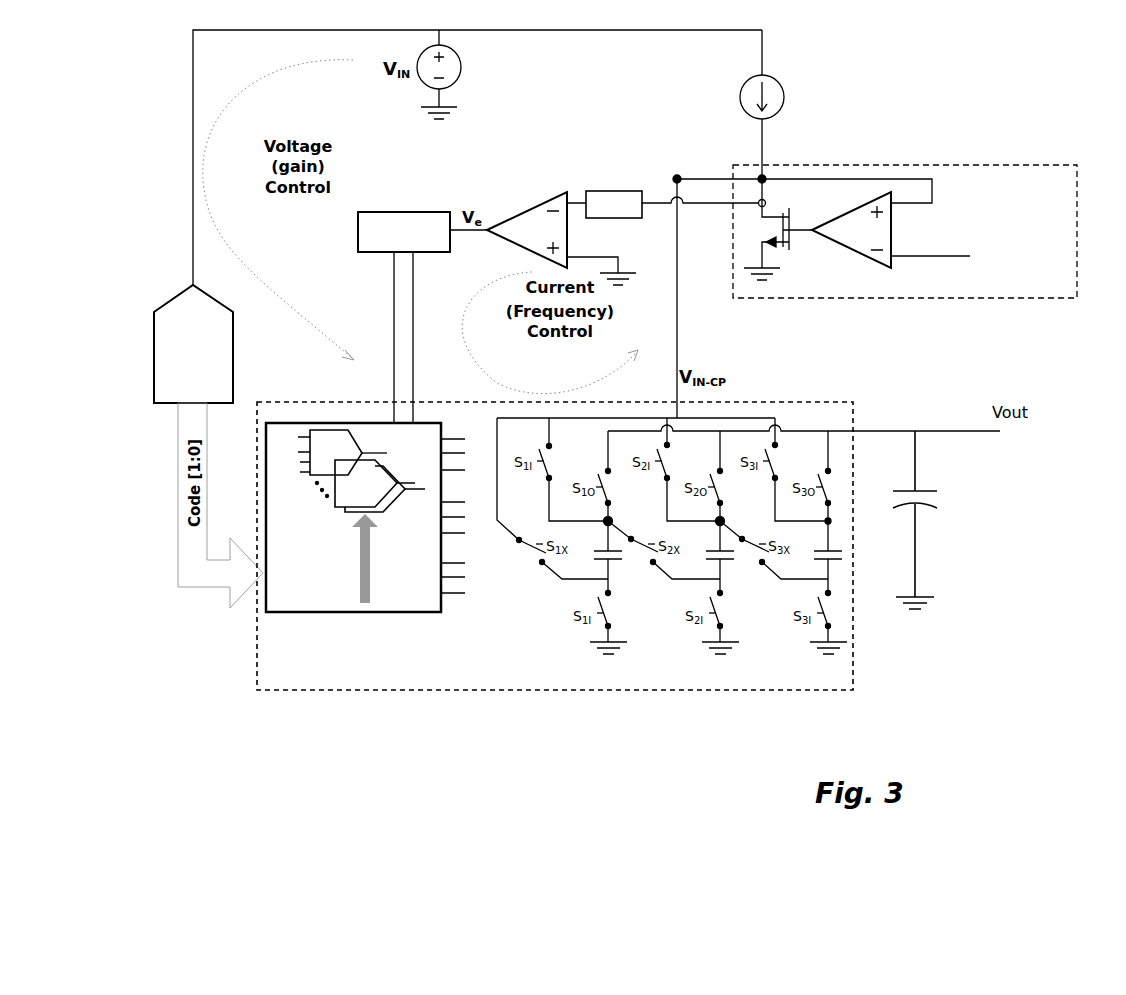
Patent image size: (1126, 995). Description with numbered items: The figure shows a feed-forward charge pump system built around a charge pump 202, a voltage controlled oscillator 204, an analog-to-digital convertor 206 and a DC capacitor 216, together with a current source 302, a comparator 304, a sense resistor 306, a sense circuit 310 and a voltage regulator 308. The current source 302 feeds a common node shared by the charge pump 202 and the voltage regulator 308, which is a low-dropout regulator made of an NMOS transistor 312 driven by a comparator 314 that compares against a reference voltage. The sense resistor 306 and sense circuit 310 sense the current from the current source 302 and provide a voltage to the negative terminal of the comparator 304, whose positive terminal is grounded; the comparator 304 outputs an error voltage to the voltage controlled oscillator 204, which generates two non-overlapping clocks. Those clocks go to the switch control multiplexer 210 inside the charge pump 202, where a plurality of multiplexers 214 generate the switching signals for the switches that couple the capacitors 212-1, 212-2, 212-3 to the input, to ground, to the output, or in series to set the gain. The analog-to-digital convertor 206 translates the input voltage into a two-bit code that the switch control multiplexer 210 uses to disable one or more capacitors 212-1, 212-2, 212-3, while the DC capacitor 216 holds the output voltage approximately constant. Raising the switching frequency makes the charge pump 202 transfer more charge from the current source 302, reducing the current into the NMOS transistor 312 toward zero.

The charge pump 202 is at (853, 683).
The voltage controlled oscillator 204 is at (447, 212).
The analog-to-digital convertor 206 is at (233, 383).
The switch control multiplexer 210 is at (441, 612).
The capacitor 212-1 is at (618, 562).
The capacitor 212-2 is at (730, 562).
The capacitor 212-3 is at (838, 560).
The multiplexers 214 is at (316, 480).
The DC capacitor 216 is at (937, 508).
The current source 302 is at (784, 72).
The comparator 304 is at (560, 192).
The sense resistor 306 is at (623, 190).
The voltage regulator 308 is at (775, 300).
The sense circuit 310 is at (758, 206).
The transistor 312 is at (797, 233).
The comparator 314 is at (890, 268).